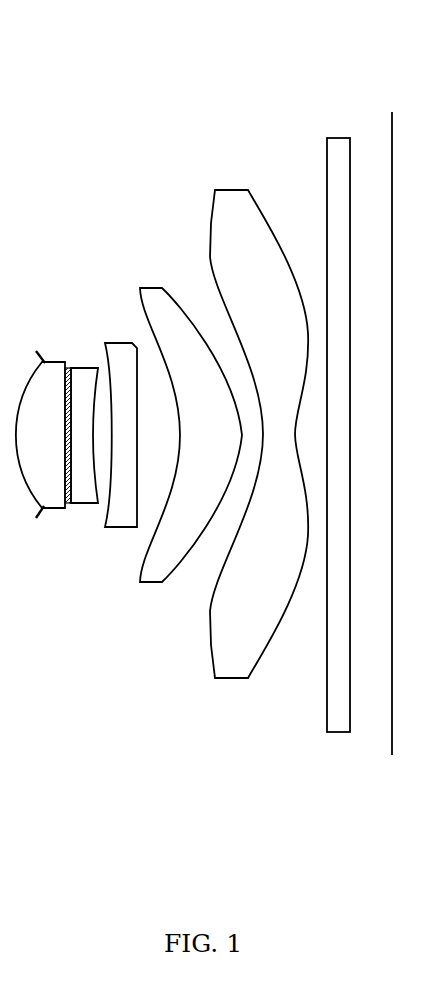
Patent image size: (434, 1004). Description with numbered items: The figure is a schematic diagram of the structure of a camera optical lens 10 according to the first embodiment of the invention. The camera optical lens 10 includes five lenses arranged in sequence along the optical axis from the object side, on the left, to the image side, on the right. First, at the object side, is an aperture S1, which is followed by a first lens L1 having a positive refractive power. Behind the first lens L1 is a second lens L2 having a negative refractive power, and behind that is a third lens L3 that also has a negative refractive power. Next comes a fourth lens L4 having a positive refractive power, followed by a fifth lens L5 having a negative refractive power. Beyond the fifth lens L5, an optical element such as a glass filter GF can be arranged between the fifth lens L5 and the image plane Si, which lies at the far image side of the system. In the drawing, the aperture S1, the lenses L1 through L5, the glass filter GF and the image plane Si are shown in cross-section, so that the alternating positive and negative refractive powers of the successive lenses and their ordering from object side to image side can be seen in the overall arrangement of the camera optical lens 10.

The camera optical lens 10 is at (227, 40).
The aperture S1 is at (29, 428).
The first lens L1 is at (40, 422).
The second lens L2 is at (81, 425).
The third lens L3 is at (121, 422).
The fourth lens L4 is at (191, 422).
The fifth lens L5 is at (259, 421).
The glass filter GF is at (337, 422).
The image plane Si is at (393, 422).